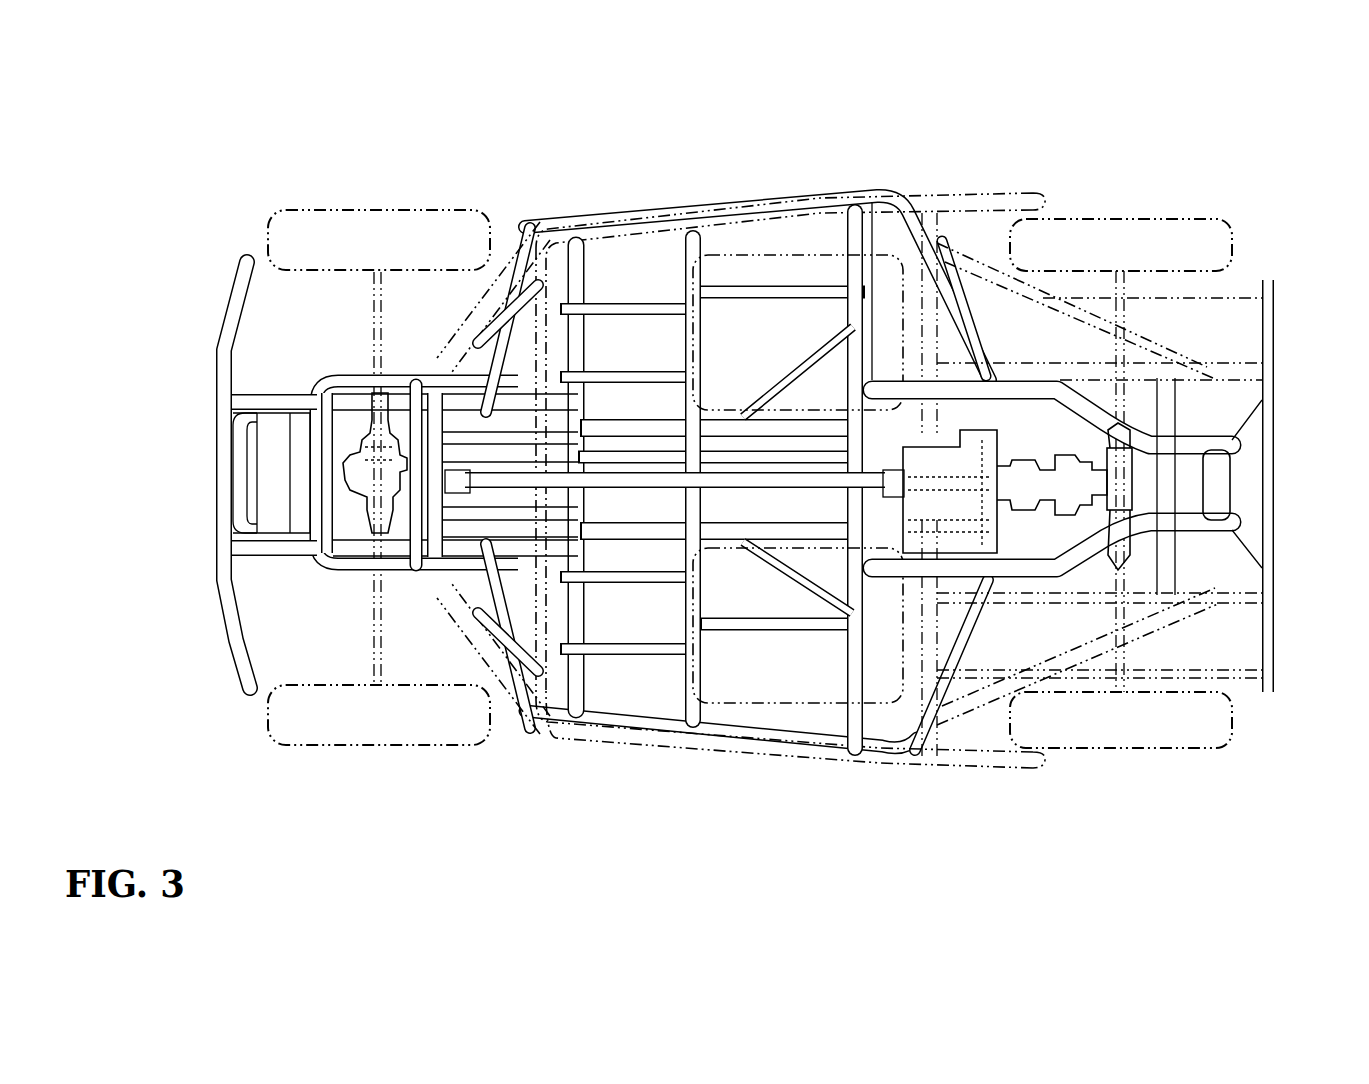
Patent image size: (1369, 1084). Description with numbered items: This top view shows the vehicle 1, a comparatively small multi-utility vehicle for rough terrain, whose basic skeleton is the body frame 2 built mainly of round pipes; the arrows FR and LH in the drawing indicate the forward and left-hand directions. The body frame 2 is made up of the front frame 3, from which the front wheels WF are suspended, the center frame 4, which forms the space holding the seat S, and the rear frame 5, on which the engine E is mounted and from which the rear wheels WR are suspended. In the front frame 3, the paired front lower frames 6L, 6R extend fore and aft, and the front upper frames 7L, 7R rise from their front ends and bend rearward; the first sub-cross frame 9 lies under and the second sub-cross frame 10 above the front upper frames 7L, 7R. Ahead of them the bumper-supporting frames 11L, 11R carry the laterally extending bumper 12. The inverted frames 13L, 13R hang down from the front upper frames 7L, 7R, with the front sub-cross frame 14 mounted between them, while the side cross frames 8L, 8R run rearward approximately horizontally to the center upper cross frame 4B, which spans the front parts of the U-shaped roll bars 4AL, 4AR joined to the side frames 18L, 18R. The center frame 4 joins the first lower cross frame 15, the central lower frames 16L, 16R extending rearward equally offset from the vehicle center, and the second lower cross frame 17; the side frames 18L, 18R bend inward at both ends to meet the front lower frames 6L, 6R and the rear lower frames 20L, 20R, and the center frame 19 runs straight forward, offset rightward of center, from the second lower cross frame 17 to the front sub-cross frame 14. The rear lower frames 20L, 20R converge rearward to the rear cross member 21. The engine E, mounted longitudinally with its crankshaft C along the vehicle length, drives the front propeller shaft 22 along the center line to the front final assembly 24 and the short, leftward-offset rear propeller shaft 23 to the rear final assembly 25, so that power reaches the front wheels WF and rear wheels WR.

The vehicle 1 is at (1124, 153).
The body frame 2 is at (870, 186).
The front frame 3 is at (404, 766).
The center frame 4 is at (724, 786).
The rear frame 5 is at (990, 665).
The front lower frame 6R is at (458, 422).
The front lower frame 6L is at (460, 532).
The front upper frame 7R is at (350, 380).
The front upper frame 7L is at (352, 570).
The side cross frame 8R is at (502, 238).
The side cross frame 8L is at (484, 742).
The first sub-cross frame 9 is at (327, 447).
The second sub-cross frame 10 is at (413, 528).
The bumper-supporting frame 11R is at (273, 398).
The bumper-supporting frame 11L is at (270, 556).
The bumper 12 is at (242, 660).
The inverted frame 13R is at (480, 333).
The inverted frame 13L is at (458, 690).
The front sub-cross frame 14 is at (440, 515).
The first lower cross frame 15 is at (553, 716).
The central lower frame 16R is at (650, 430).
The central lower frame 16L is at (655, 640).
The second lower cross frame 17 is at (917, 223).
The side frame 18R is at (762, 216).
The side frame 18L is at (780, 752).
The center frame 19 is at (720, 468).
The rear lower frame 20R is at (1048, 388).
The rear lower frame 20L is at (1042, 578).
The rear cross member 21 is at (1217, 482).
The front propeller shaft 22 is at (768, 478).
The rear propeller shaft 23 is at (1026, 490).
The front final assembly 24 is at (352, 482).
The rear final assembly 25 is at (1147, 500).
The roll bar 4AR is at (583, 215).
The roll bar 4AL is at (618, 747).
The center upper cross frame 4B is at (545, 332).
The crankshaft C is at (987, 590).
The engine E is at (1000, 448).
The seat S is at (818, 252).
The front wheel WF is at (383, 210).
The rear wheel WR is at (1200, 220).
The front direction FR is at (130, 484).
The left-hand direction LH is at (840, 855).